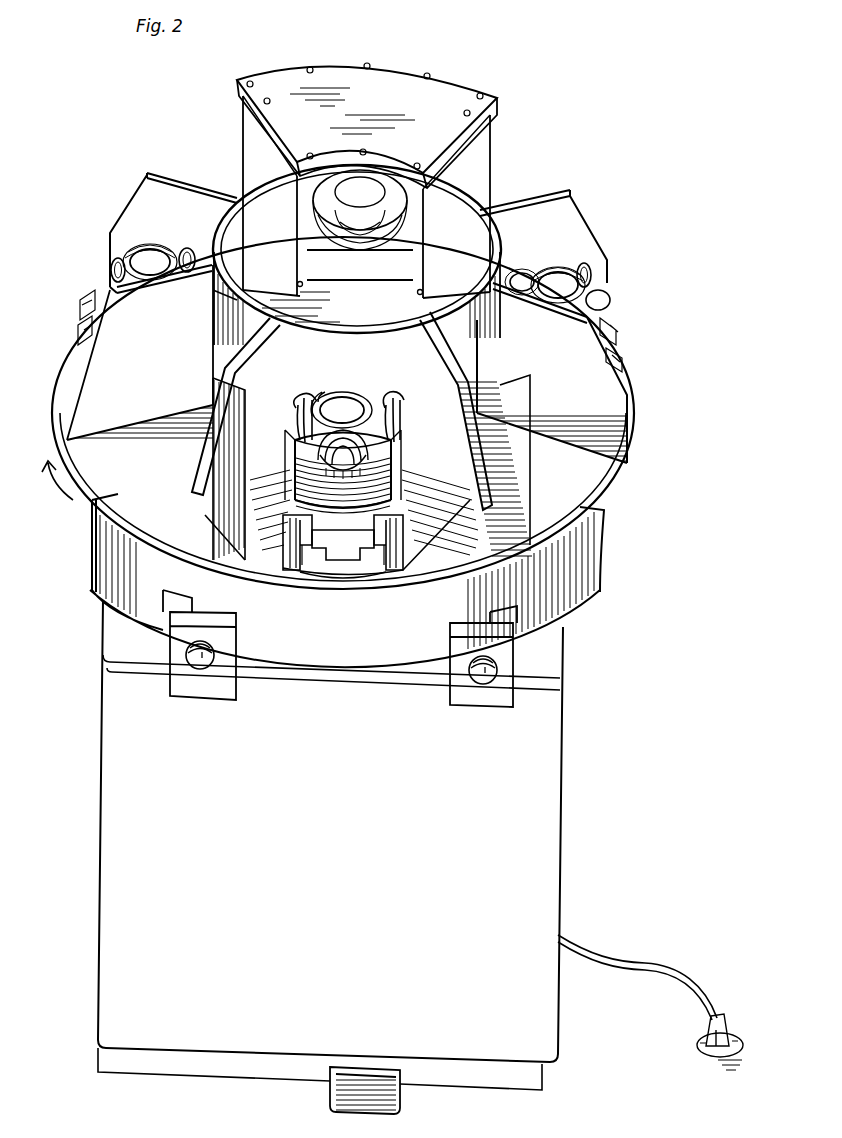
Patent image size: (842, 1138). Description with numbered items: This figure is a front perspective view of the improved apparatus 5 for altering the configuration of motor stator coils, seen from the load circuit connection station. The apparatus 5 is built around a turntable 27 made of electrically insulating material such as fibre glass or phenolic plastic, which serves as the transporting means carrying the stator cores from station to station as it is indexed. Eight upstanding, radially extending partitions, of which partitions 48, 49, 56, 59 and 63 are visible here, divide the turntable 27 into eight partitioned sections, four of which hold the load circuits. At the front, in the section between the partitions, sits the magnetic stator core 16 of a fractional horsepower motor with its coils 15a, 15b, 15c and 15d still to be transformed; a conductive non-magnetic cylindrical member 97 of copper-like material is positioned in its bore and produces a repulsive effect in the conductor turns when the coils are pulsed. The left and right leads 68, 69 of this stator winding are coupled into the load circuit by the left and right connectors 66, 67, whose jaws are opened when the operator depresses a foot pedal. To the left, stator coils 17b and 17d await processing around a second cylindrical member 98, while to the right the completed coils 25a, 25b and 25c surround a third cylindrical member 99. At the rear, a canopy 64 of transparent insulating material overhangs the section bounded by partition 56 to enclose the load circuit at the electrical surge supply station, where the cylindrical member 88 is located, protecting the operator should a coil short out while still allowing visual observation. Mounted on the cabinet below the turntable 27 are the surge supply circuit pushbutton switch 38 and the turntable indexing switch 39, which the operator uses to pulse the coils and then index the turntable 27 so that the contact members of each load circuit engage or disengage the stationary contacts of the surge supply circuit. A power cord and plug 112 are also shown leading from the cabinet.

The improved apparatus 5 is at (358, 314).
The coil 15a is at (336, 393).
The coil 15b is at (403, 350).
The coil 15c is at (394, 448).
The coil 15d is at (298, 405).
The magnetic stator core 16 is at (289, 406).
The coil 17b is at (187, 250).
The coil 17d is at (112, 272).
The coil 25a is at (588, 268).
The coil 25b is at (612, 302).
The coil 25c is at (528, 272).
The turntable 27 is at (588, 573).
The surge supply circuit pushbutton switch 38 is at (204, 657).
The turntable indexing switch 39 is at (478, 667).
The partition 48 is at (145, 392).
The partition 49 is at (167, 170).
The partition 56 is at (255, 145).
The partition 59 is at (602, 414).
The partition 63 is at (490, 485).
The canopy 64 is at (480, 143).
The left connector 66 is at (286, 546).
The right connector 67 is at (395, 551).
The left lead 68 is at (300, 512).
The right lead 69 is at (390, 481).
The cylindrical member 88 is at (370, 185).
The cylindrical member 97 is at (346, 403).
The cylindrical member 98 is at (150, 258).
The cylindrical member 99 is at (559, 282).
The plug 112 is at (710, 1036).